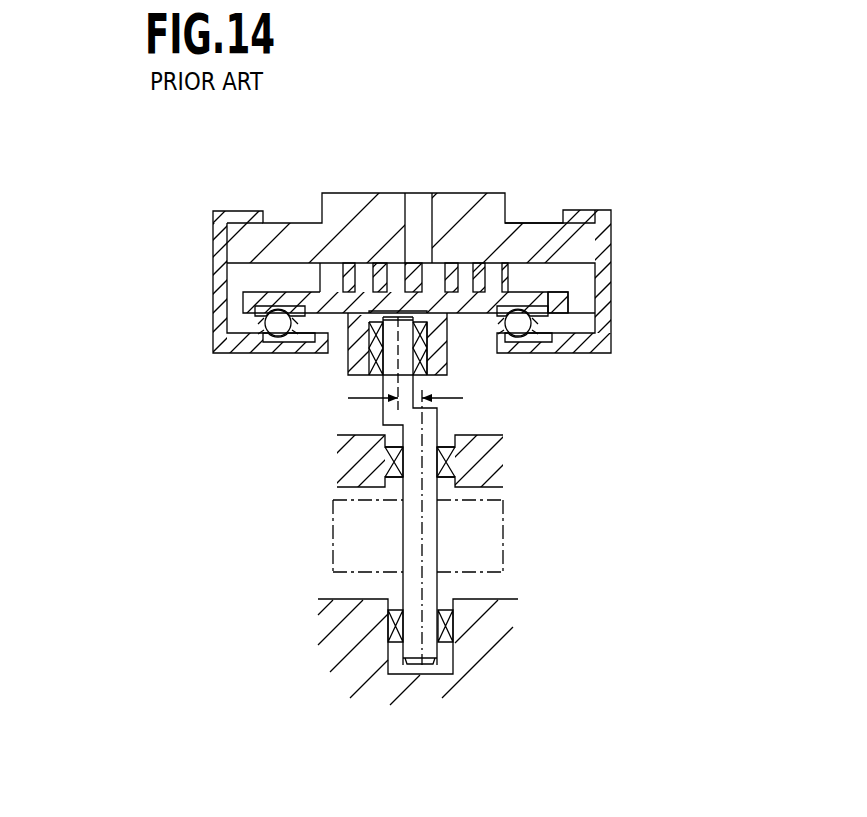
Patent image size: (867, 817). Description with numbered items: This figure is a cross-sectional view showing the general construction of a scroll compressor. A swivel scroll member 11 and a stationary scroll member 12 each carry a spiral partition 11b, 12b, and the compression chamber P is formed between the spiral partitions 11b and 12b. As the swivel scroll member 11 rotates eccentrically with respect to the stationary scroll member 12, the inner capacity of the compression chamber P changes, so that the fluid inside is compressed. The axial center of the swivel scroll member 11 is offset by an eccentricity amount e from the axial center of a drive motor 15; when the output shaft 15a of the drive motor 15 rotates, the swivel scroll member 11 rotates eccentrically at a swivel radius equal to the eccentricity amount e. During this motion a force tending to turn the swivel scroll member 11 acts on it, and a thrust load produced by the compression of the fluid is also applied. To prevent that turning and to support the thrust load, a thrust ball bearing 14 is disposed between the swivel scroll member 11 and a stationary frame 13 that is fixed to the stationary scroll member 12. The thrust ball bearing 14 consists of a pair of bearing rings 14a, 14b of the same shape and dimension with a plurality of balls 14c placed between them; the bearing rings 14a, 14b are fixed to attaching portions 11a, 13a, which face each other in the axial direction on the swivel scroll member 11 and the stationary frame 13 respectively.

The swivel scroll member 11 is at (437, 272).
The attaching portion 11a is at (550, 303).
The spiral partition 11b is at (372, 267).
The stationary scroll member 12 is at (493, 210).
The spiral partition 12b is at (318, 278).
The compression chamber P is at (360, 266).
The stationary frame 13 is at (258, 306).
The attaching portion 13a is at (563, 353).
The thrust ball bearing 14 is at (176, 312).
The bearing ring 14a is at (255, 310).
The bearing ring 14b is at (268, 343).
The balls 14c is at (262, 331).
The drive motor 15 is at (505, 548).
The output shaft 15a is at (410, 543).
The eccentricity amount e is at (415, 388).